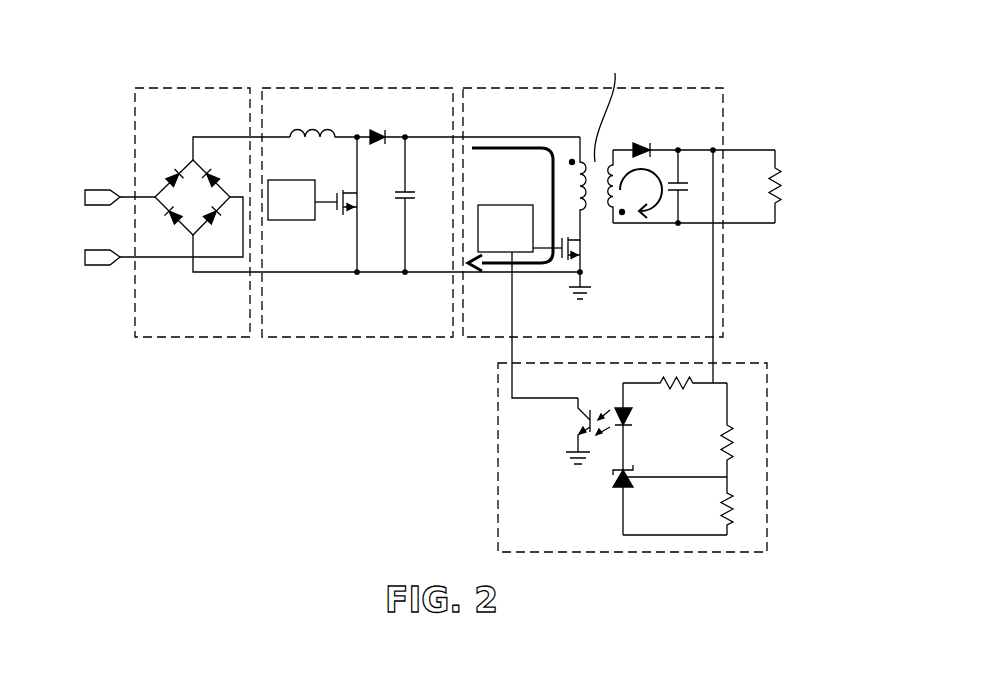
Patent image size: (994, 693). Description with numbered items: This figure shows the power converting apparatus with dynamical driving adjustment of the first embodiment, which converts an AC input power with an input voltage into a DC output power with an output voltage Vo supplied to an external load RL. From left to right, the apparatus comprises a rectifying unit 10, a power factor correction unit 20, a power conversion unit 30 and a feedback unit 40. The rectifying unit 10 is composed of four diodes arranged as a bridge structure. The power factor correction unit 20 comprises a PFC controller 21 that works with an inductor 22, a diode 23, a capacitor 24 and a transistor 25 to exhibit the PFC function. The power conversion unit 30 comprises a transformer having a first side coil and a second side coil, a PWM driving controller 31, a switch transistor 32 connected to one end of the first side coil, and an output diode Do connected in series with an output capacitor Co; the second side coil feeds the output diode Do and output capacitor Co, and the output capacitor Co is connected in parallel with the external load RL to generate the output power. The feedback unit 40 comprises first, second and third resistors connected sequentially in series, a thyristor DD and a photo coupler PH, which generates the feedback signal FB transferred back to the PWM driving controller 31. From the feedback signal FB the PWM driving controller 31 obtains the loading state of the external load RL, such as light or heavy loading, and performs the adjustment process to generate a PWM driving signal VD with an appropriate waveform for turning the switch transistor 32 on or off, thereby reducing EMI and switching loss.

The rectifying unit 10 is at (192, 87).
The power factor correction unit 20 is at (357, 87).
The PFC controller 21 is at (290, 222).
The inductor 22 is at (312, 127).
The diode 23 is at (375, 128).
The capacitor 24 is at (410, 188).
The transistor 25 is at (355, 205).
The power conversion unit 30 is at (660, 87).
The PWM driving controller 31 is at (505, 203).
The switch transistor 32 is at (583, 248).
The feedback unit 40 is at (498, 457).